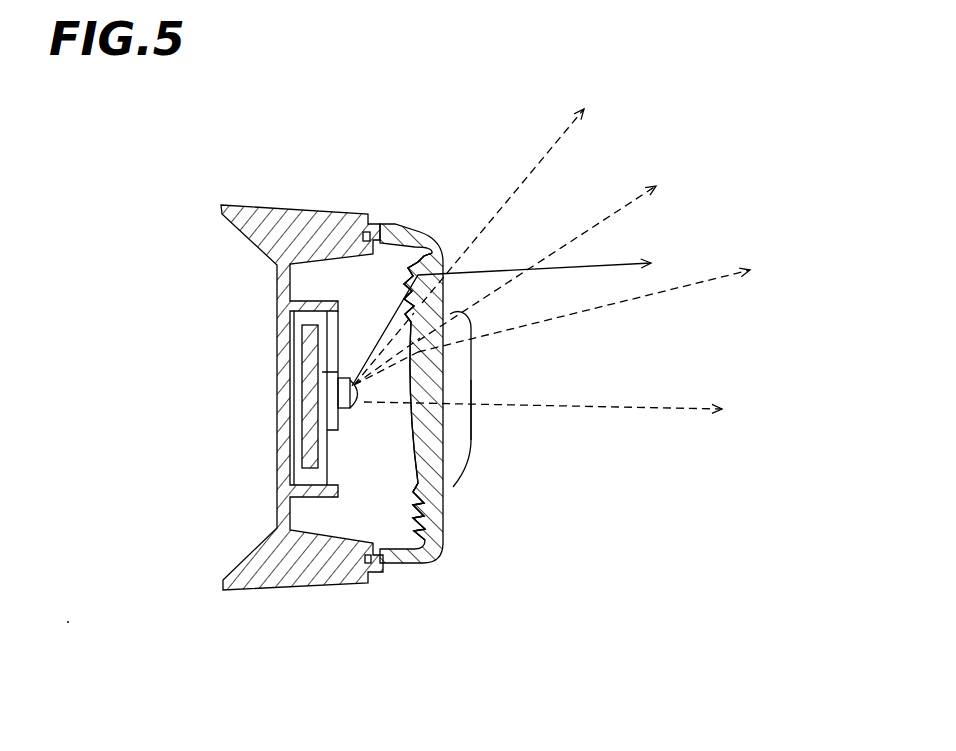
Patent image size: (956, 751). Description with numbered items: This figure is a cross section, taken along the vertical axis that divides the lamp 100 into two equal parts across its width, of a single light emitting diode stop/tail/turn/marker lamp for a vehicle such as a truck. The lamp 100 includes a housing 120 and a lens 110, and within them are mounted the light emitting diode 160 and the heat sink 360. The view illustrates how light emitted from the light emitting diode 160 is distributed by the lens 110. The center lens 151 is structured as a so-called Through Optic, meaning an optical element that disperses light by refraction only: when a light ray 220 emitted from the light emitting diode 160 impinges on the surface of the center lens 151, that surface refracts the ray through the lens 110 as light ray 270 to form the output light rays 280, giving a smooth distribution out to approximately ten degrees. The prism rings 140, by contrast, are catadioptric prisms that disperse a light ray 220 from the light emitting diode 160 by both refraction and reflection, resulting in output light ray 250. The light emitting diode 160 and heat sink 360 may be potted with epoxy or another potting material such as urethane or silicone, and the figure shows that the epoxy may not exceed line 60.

The lamp 100 is at (360, 178).
The lens 110 is at (443, 562).
The housing 120 is at (248, 553).
The prism rings 140 is at (444, 524).
The center lens 151 is at (472, 433).
The light emitting diode 160 is at (445, 413).
The light ray 220 is at (415, 333).
The output light ray 250 is at (607, 267).
The light ray 270 is at (442, 338).
The light rays 280 is at (540, 163).
The heat sink 360 is at (307, 417).
The line 60 is at (340, 420).